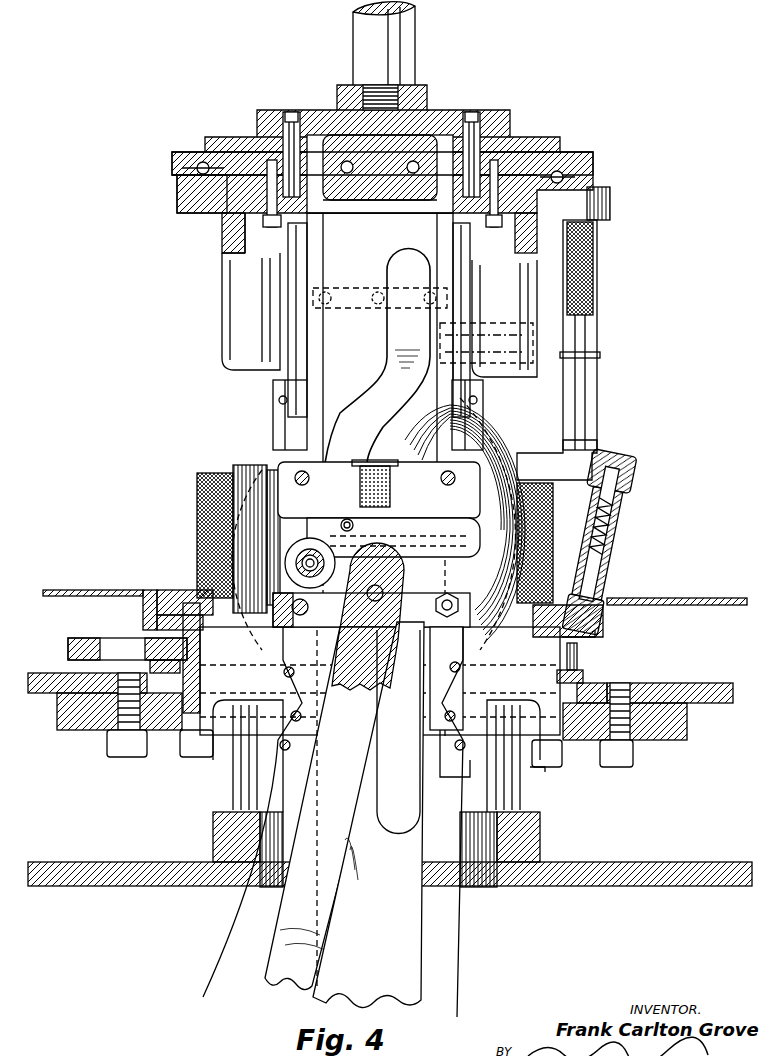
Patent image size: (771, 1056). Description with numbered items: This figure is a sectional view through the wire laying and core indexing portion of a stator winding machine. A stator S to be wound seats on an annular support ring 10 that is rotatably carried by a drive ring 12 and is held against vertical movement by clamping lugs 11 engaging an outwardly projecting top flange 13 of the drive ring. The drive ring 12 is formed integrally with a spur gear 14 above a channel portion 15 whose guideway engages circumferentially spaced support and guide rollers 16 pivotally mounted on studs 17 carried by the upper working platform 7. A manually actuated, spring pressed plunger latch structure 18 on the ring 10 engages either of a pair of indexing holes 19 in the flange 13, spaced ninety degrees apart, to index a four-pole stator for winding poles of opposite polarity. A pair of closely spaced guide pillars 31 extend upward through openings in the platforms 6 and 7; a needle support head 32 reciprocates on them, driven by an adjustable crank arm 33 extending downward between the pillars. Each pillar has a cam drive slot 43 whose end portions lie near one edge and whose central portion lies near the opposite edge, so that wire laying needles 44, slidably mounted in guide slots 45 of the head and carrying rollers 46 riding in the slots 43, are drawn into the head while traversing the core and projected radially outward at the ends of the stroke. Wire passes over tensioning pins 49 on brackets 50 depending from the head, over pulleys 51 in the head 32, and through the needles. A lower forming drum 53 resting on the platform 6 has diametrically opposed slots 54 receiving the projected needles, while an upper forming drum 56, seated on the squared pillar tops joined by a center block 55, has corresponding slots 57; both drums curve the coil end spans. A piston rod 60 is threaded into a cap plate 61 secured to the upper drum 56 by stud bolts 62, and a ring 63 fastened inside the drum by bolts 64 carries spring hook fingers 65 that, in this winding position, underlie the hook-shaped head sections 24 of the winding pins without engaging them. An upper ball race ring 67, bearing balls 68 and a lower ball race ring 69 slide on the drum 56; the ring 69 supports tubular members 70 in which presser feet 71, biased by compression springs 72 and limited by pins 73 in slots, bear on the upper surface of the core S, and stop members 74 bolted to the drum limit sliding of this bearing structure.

The platform 6 is at (652, 866).
The upper working platform 7 is at (690, 692).
The annular support ring 10 is at (168, 590).
The clamping lugs 11 is at (143, 617).
The drive ring 12 is at (192, 651).
The top flange 13 is at (603, 625).
The spur gear 14 is at (577, 657).
The channel portion 15 is at (583, 675).
The support and guide rollers 16 is at (631, 715).
The studs 17 is at (540, 771).
The plunger latch structure 18 is at (615, 540).
The indexing holes 19 is at (595, 637).
The hook-shaped head section 24 is at (273, 400).
The guide pillars 31 is at (368, 815).
The needle support head 32 is at (379, 490).
The crank arm 33 is at (335, 808).
The cam drive slots 43 is at (366, 393).
The wire laying needles 44 is at (390, 524).
The guide slots 45 is at (379, 616).
The roller 46 is at (347, 519).
The tensioning pins 49 is at (290, 748).
The brackets 50 is at (371, 685).
The pulleys 51 is at (310, 545).
The forming drum 53 is at (540, 854).
The slots 54 is at (540, 808).
The center block 55 is at (416, 200).
The upper forming drum 56 is at (222, 230).
The slots 57 is at (222, 296).
The piston rod 60 is at (416, 45).
The cap plate 61 is at (258, 122).
The stud bolts 62 is at (297, 112).
The ring 63 is at (232, 250).
The bolts 64 is at (274, 228).
The spring hook fingers 65 is at (290, 302).
The ball race ring 67 is at (172, 160).
The bearing balls 68 is at (203, 162).
The lower ball race ring 69 is at (178, 210).
The tubular members 70 is at (597, 232).
The presser foot 71 is at (597, 411).
The compression springs 72 is at (597, 270).
The pins 73 is at (600, 355).
The stop members 74 is at (358, 288).
The stator S is at (197, 495).